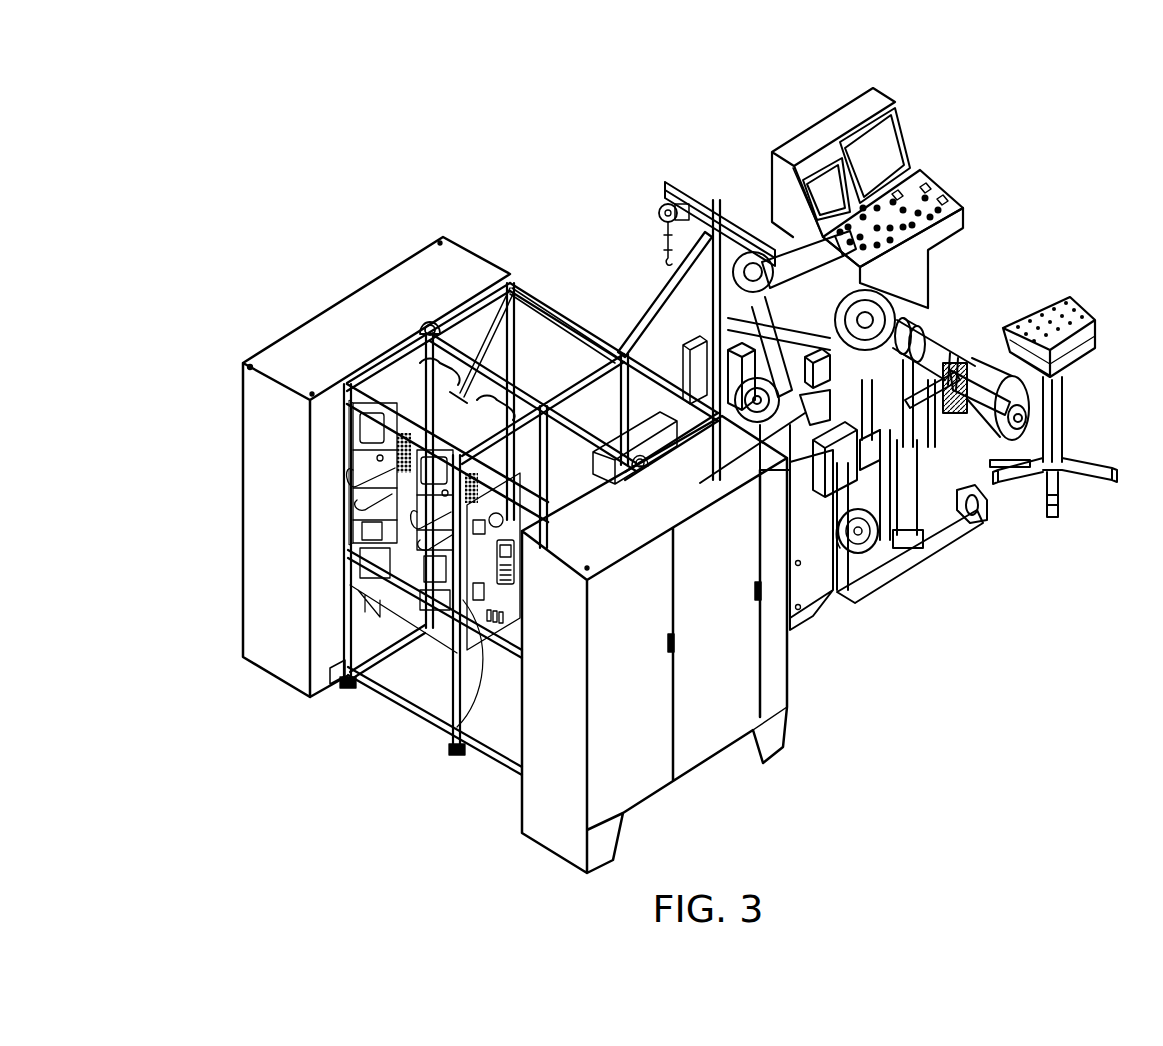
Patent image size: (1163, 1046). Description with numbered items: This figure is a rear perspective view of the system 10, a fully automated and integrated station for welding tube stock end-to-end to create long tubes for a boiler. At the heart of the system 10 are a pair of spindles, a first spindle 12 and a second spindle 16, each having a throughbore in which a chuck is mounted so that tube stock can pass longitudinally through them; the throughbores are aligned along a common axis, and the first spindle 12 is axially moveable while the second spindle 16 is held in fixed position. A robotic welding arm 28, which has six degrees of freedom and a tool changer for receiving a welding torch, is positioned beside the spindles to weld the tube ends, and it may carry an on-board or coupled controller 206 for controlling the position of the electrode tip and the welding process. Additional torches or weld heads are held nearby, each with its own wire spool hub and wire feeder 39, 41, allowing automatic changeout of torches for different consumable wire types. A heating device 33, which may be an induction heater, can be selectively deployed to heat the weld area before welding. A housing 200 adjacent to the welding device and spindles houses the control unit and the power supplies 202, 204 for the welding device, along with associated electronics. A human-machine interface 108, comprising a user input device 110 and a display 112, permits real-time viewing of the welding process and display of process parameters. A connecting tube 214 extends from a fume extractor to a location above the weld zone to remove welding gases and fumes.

The system 10 is at (440, 112).
The housing 200 is at (296, 294).
The power supply 202 is at (472, 418).
The power supply 204 is at (386, 345).
The controller 206 is at (438, 715).
The connecting tube 214 is at (693, 340).
The wire spool hub and wire feeder 39 is at (662, 243).
The robotic welding arm 28 is at (797, 243).
The display 112 is at (888, 216).
The user input device 110 is at (912, 133).
The human-machine interface 108 is at (945, 88).
The second spindle 16 is at (830, 291).
The first spindle 12 is at (933, 357).
The heating device 33 is at (873, 543).
The wire spool hub and wire feeder 41 is at (843, 460).